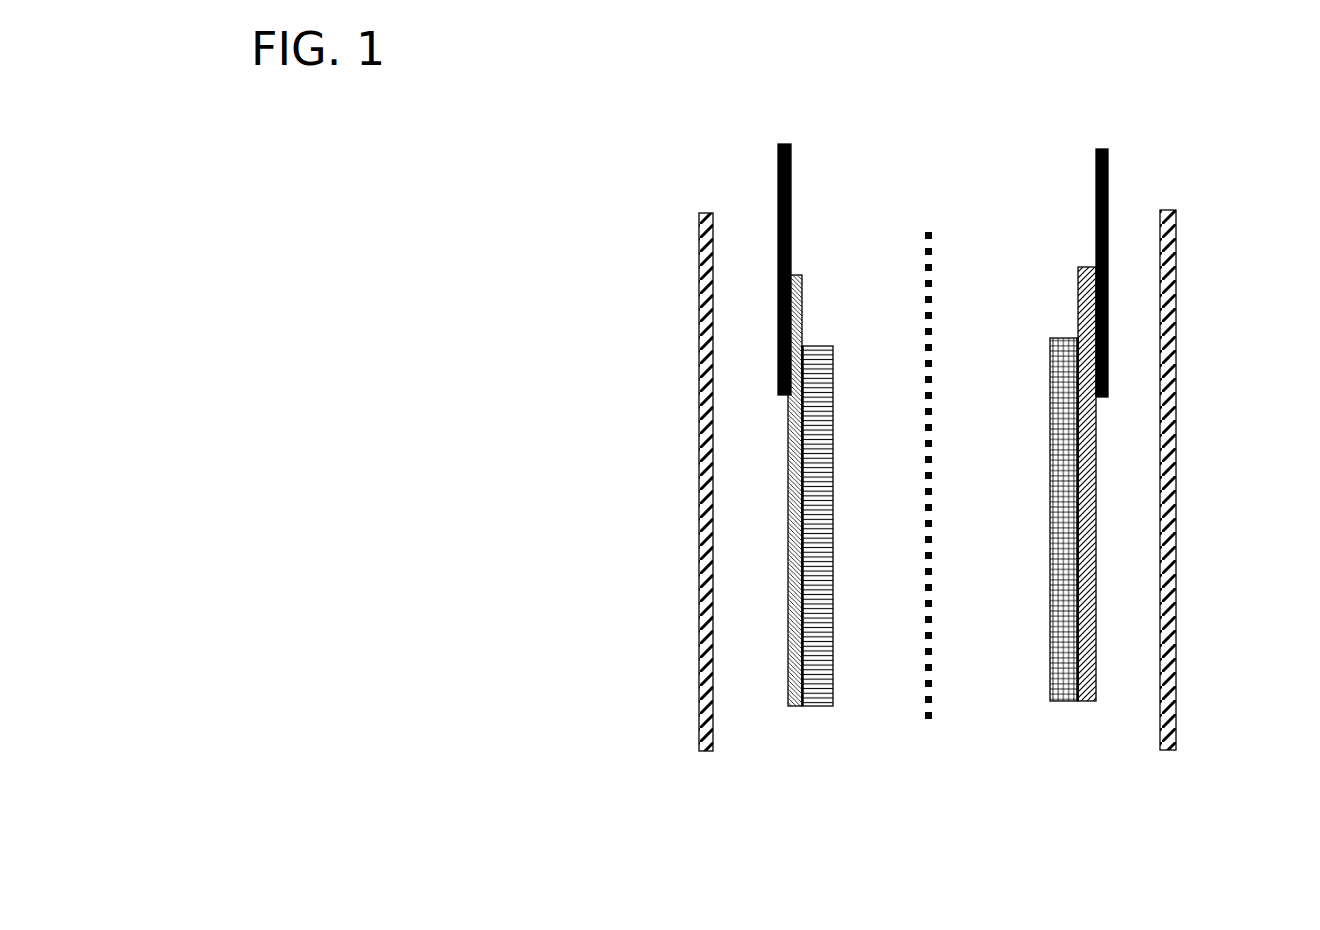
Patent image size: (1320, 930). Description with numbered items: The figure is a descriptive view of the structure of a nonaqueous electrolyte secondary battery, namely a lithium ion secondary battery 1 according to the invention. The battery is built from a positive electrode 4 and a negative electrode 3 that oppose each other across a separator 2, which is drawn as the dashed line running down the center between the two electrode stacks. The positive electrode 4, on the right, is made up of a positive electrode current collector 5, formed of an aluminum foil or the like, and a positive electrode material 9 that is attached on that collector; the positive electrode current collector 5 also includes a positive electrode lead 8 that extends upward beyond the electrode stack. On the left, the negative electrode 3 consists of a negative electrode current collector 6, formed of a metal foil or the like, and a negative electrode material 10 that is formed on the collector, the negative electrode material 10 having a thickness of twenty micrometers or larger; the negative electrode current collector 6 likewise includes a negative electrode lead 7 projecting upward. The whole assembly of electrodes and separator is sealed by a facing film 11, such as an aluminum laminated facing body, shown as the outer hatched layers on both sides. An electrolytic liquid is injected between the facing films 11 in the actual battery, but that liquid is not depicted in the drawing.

The lithium ion secondary battery 1 is at (1203, 259).
The separator 2 is at (926, 748).
The negative electrode 3 is at (812, 771).
The positive electrode 4 is at (1077, 772).
The positive electrode current collector 5 is at (1080, 272).
The negative electrode current collector 6 is at (796, 275).
The negative electrode lead 7 is at (778, 206).
The positive electrode lead 8 is at (1107, 218).
The positive electrode material 9 is at (1115, 565).
The negative electrode material 10 is at (737, 510).
The facing film 11 is at (700, 778).